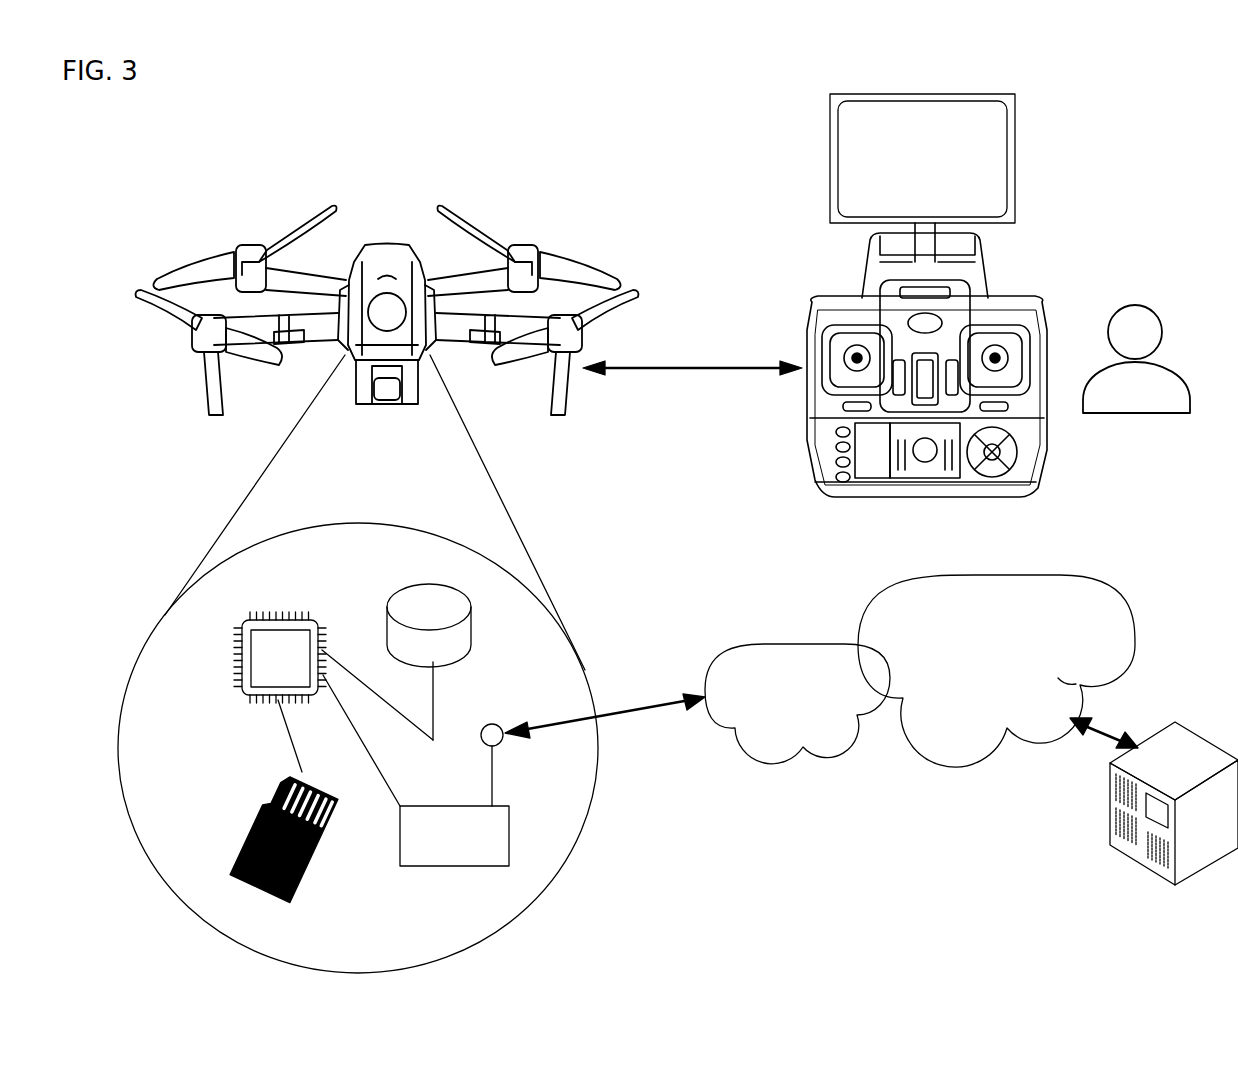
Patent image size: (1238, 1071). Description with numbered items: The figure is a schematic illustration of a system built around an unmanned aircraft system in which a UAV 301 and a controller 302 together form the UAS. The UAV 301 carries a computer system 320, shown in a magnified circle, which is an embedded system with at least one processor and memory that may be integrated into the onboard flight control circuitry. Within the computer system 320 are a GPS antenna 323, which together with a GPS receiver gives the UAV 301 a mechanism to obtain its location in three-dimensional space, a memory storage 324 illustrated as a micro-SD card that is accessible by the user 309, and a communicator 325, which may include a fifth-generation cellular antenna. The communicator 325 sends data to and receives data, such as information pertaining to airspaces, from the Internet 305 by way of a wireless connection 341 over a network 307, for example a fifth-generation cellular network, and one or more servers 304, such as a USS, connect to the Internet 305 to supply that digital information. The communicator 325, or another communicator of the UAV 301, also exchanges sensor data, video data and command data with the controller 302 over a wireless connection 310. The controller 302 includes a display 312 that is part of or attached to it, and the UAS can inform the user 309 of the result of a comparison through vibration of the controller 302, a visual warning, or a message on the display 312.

The UAV 301 is at (195, 380).
The controller 302 is at (807, 408).
The server 304 is at (1113, 793).
The Internet 305 is at (996, 671).
The network 307 is at (797, 704).
The user 309 is at (1135, 395).
The wireless connection 310 is at (712, 371).
The display 312 is at (1020, 165).
The computer system 320 is at (153, 628).
The GPS antenna 323 is at (472, 627).
The memory storage 324 is at (222, 863).
The communicator 325 is at (454, 795).
The wireless connection 341 is at (636, 716).